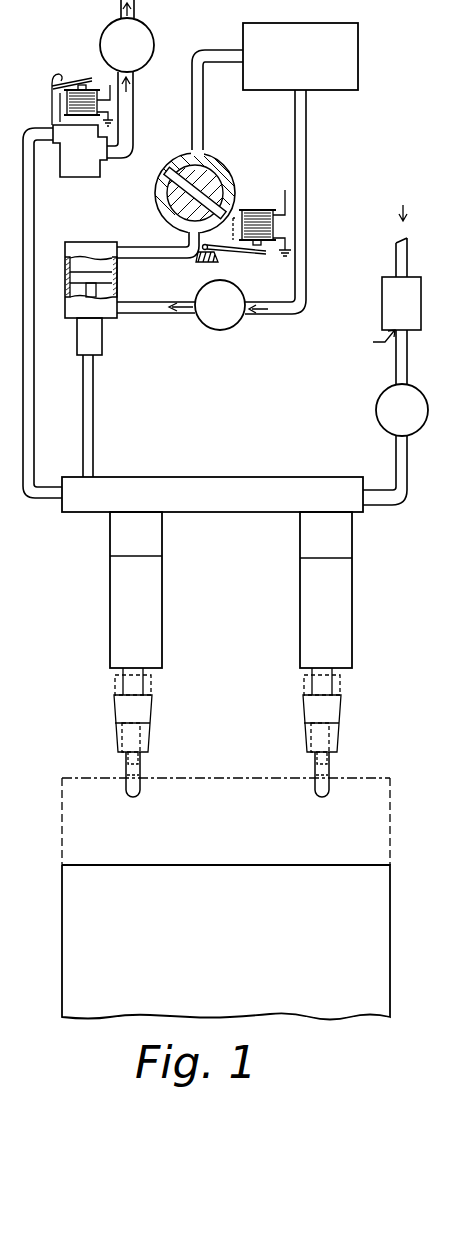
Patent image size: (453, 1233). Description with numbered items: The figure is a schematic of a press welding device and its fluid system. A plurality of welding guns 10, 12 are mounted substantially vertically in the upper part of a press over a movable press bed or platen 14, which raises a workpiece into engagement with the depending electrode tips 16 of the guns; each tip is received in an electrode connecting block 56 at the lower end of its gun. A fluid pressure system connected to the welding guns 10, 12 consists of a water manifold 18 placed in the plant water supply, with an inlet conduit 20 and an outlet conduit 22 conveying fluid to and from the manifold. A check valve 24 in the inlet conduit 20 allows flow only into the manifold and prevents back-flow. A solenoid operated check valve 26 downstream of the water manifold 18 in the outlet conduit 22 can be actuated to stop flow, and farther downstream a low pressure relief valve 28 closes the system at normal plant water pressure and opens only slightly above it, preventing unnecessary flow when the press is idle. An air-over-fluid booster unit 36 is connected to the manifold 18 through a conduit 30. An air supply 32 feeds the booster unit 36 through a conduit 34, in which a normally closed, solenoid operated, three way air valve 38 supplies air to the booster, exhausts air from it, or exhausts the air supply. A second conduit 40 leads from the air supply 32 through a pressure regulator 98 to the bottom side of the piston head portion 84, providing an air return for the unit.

The welding gun 10 is at (114, 630).
The welding gun 12 is at (302, 632).
The movable press bed or platen 14 is at (87, 958).
The electrode tip 16 is at (143, 767).
The water manifold 18 is at (217, 485).
The inlet conduit 20 is at (397, 458).
The outlet conduit 22 is at (27, 408).
The check valve 24 is at (380, 405).
The solenoid operated check valve 26 is at (82, 165).
The low pressure relief valve 28 is at (103, 36).
The conduit 30 is at (90, 385).
The air supply 32 is at (260, 42).
The conduit 34 is at (196, 118).
The booster unit 36 is at (85, 243).
The solenoid operated three way air valve 38 is at (230, 172).
The second conduit 40 is at (303, 160).
The electrode connecting block 56 is at (120, 728).
The head portion 84 is at (95, 272).
The pressure regulator 98 is at (223, 330).